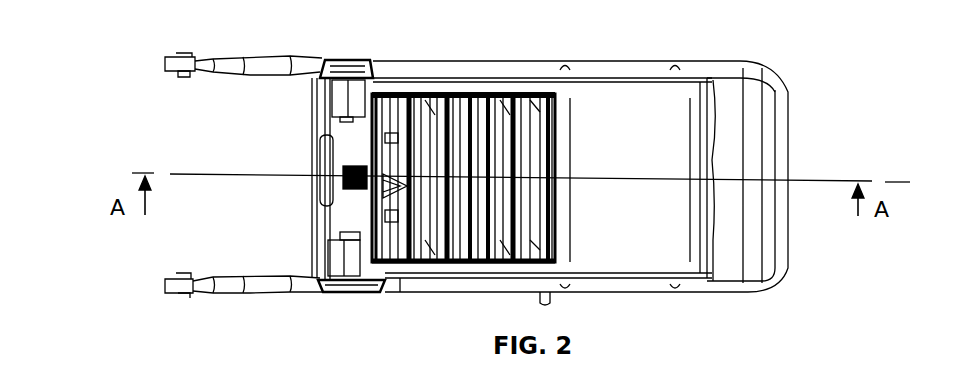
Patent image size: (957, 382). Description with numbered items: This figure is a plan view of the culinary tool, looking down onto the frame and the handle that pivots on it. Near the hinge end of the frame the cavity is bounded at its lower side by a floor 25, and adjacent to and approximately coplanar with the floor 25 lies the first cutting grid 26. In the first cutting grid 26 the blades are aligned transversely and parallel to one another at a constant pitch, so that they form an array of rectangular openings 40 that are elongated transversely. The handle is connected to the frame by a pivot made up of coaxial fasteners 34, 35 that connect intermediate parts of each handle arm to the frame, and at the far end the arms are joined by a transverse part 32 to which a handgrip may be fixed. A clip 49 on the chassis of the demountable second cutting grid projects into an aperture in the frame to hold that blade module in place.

The floor 25 is at (675, 150).
The first cutting grid 26 is at (455, 108).
The transverse part 32 is at (778, 142).
The coaxial fastener 34 is at (344, 232).
The coaxial fastener 35 is at (346, 120).
The rectangular openings 40 is at (530, 32).
The clip 49 is at (343, 168).